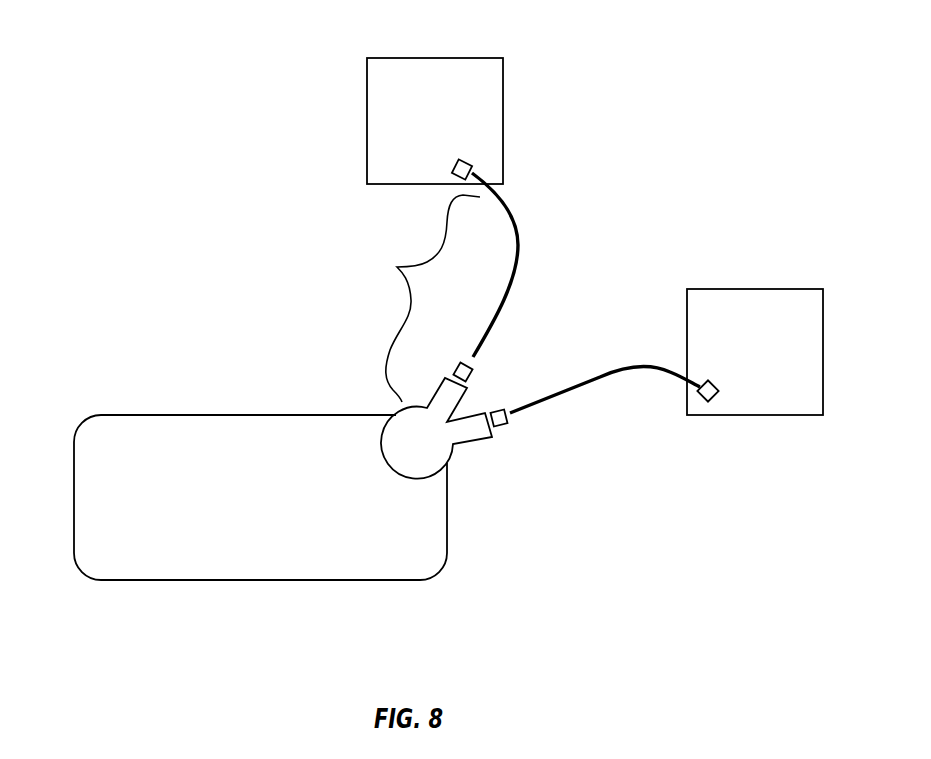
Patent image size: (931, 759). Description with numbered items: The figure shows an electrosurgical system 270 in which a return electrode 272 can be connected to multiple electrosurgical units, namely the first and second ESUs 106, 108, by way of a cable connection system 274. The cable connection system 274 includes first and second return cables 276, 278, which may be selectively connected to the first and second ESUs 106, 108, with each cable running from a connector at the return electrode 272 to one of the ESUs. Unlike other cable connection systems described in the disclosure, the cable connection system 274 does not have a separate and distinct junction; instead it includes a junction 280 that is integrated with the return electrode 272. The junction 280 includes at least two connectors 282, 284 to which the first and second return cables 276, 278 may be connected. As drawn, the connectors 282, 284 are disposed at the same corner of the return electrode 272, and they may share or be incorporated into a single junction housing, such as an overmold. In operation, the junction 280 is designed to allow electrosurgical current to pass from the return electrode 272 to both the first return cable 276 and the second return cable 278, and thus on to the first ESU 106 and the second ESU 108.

The electrosurgical system 270 is at (213, 55).
The first ESU 106 is at (430, 58).
The second ESU 108 is at (745, 288).
The return electrode 272 is at (215, 581).
The cable connection system 274 is at (417, 298).
The first return cable 276 is at (537, 218).
The second return cable 278 is at (607, 390).
The junction 280 is at (467, 455).
The connector 282 is at (426, 406).
The connector 284 is at (482, 440).